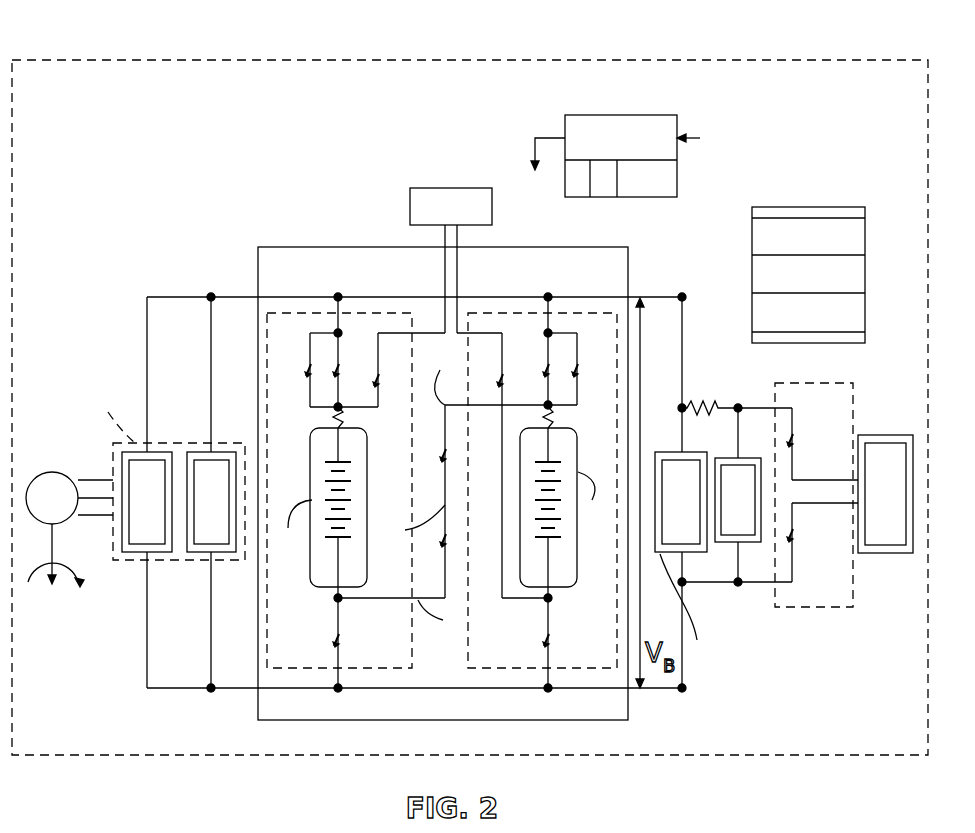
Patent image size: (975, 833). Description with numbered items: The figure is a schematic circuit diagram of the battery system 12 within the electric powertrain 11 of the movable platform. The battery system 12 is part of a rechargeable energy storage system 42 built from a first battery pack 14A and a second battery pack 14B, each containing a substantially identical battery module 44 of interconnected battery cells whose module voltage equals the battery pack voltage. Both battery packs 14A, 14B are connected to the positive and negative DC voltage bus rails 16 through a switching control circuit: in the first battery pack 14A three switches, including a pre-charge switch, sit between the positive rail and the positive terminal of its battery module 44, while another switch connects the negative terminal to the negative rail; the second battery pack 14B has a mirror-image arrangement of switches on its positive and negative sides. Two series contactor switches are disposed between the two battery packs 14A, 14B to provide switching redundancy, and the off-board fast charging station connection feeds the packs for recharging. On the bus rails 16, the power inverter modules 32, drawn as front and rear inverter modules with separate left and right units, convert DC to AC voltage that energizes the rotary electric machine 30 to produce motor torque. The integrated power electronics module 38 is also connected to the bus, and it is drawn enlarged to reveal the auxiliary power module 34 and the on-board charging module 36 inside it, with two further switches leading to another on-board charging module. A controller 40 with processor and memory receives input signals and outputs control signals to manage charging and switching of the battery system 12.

The electric powertrain 11 is at (68, 58).
The battery system 12 is at (432, 185).
The first battery pack 14A is at (335, 302).
The second battery pack 14B is at (515, 312).
The DC voltage bus rails 16 is at (170, 708).
The rotary electric machine 30 is at (28, 480).
The power inverter module 32 is at (135, 562).
The auxiliary power module 34 is at (853, 241).
The on-board charging module 36 is at (858, 318).
The integrated power electronics module 38 is at (866, 212).
The controller 40 is at (618, 115).
The rechargeable energy storage system 42 is at (322, 247).
The battery module 44 is at (310, 585).